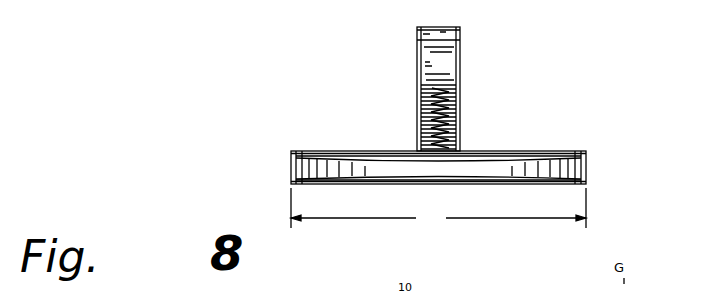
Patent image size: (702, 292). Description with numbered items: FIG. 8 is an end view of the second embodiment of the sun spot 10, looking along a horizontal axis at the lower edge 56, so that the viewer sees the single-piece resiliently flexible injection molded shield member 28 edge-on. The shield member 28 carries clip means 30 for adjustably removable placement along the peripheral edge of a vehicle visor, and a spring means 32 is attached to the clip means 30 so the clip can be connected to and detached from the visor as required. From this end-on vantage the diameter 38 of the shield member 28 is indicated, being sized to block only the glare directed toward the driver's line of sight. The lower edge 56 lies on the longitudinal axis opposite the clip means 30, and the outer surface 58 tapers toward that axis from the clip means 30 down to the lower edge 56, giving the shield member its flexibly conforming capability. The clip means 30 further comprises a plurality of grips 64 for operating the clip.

The sun spot 10 is at (350, 33).
The single-piece resiliently flexible injection molded shield member 28 is at (597, 165).
The clip means 30 is at (471, 62).
The spring means 32 is at (450, 110).
The diameter 38 is at (438, 208).
The lower edge 56 is at (420, 168).
The outer surface 58 is at (356, 156).
The grips 64 is at (428, 72).